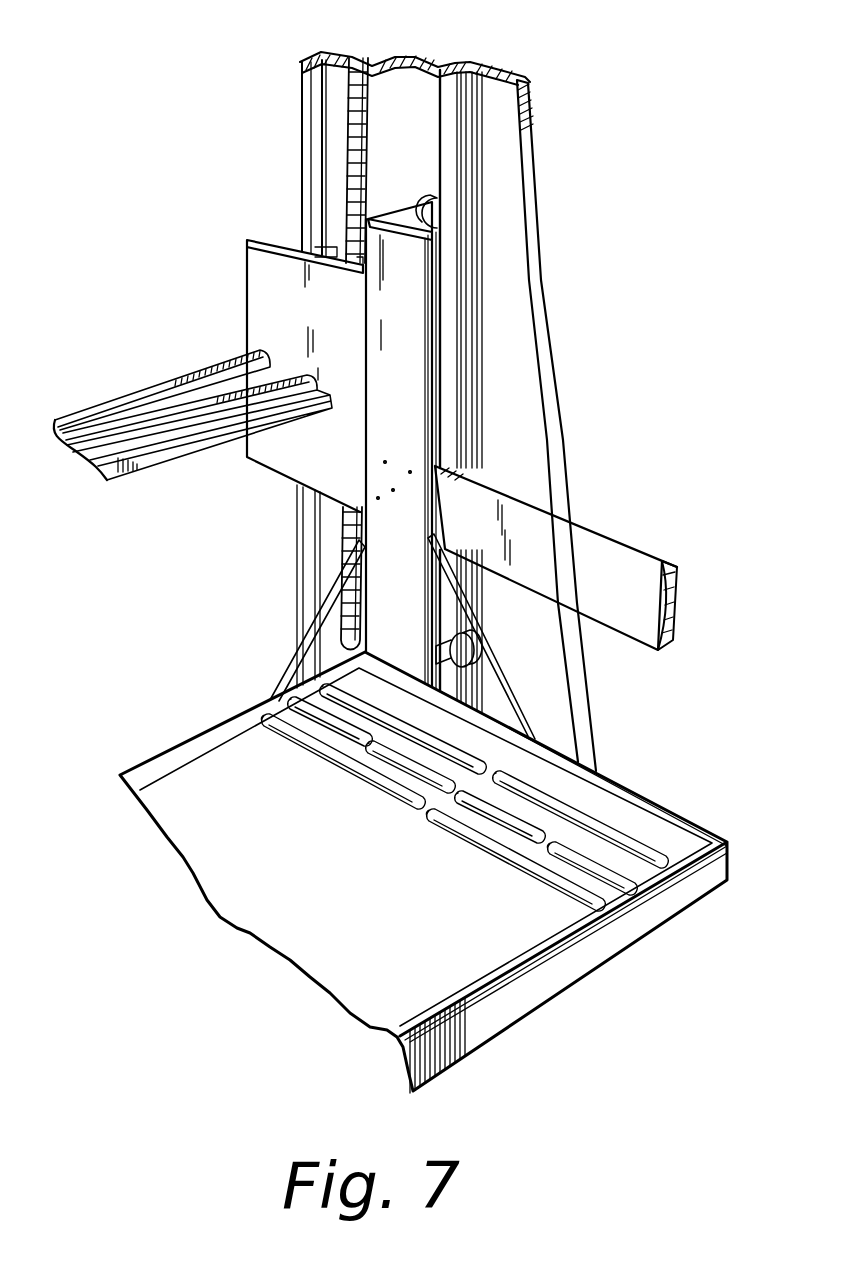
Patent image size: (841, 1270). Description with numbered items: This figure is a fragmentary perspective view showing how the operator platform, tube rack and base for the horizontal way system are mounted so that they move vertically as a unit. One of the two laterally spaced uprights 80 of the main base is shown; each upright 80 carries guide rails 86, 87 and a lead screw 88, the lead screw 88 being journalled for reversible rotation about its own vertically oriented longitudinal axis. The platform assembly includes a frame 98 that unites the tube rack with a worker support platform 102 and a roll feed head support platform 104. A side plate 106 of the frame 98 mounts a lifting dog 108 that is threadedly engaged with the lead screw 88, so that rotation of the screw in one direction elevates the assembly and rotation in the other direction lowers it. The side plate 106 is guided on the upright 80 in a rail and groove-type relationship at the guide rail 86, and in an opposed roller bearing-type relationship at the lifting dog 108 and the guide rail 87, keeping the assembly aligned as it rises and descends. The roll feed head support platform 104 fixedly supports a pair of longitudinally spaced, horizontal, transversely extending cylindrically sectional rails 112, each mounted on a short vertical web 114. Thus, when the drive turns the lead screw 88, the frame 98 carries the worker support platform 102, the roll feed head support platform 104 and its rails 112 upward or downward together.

The upright 80 is at (522, 295).
The guide rail 86 is at (302, 160).
The guide rail 87 is at (440, 150).
The lead screw 88 is at (371, 99).
The frame 98 is at (613, 528).
The worker support platform 102 is at (306, 890).
The roll feed head support platform 104 is at (158, 407).
The side plate 106 is at (668, 606).
The lifting dog 108 is at (430, 198).
The cylindrically sectional rail 112 is at (105, 425).
The short vertical web 114 is at (238, 407).